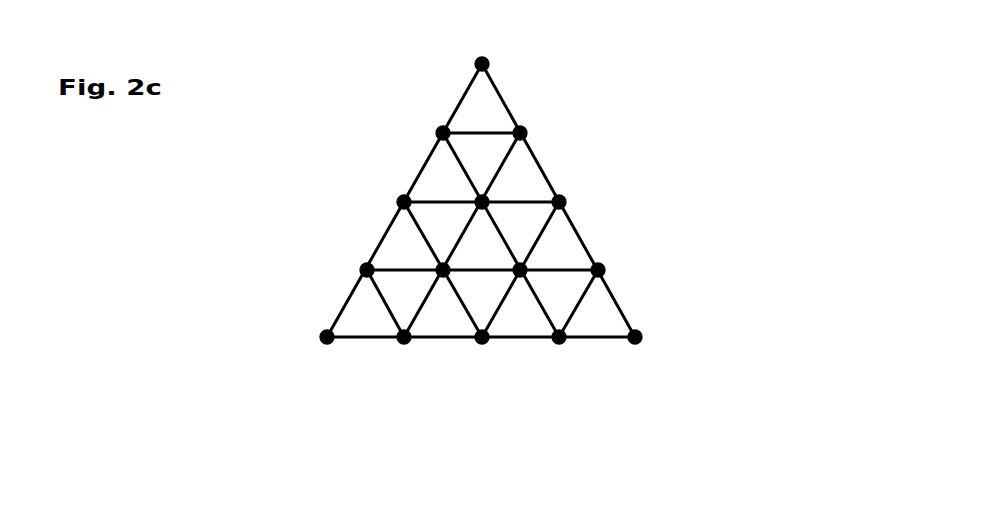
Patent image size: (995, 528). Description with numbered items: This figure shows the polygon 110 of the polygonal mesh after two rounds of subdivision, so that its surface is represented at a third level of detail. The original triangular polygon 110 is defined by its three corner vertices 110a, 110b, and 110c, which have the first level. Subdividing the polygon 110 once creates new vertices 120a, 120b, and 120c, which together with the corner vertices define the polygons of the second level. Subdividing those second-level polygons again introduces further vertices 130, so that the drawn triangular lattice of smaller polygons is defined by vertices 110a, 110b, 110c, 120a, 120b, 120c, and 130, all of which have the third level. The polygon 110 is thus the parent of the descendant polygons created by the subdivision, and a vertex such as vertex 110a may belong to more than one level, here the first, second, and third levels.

The polygon 110 is at (780, 76).
The vertex 110a is at (487, 58).
The vertex 110b is at (322, 332).
The vertex 110c is at (640, 332).
The vertex 120a is at (398, 197).
The vertex 120b is at (485, 344).
The vertex 120c is at (565, 197).
The vertex 130 is at (526, 127).